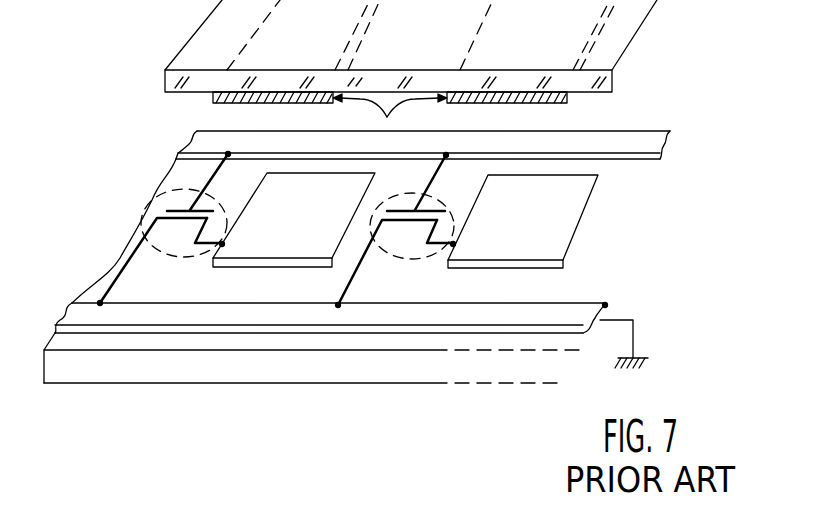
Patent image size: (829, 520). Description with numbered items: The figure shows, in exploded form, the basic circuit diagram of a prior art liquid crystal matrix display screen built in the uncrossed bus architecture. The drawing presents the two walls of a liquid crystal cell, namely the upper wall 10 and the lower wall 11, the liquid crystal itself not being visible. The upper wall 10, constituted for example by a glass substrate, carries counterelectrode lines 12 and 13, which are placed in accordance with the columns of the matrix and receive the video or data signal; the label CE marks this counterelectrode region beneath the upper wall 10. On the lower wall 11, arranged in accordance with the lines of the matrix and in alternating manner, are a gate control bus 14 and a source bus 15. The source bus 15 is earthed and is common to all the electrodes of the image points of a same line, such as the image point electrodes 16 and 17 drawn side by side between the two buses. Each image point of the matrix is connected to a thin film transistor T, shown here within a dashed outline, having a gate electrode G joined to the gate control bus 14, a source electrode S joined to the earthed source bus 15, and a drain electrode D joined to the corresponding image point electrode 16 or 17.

The upper wall 10 is at (180, 77).
The lower wall 11 is at (82, 368).
The counterelectrode line 12 is at (213, 98).
The counterelectrode line 13 is at (562, 98).
The gate control bus 14 is at (617, 145).
The source bus 15 is at (177, 317).
The image point electrode 16 is at (288, 237).
The image point electrode 17 is at (567, 218).
The thin film transistor T is at (272, 230).
The gate electrode G is at (210, 192).
The source electrode S is at (130, 250).
The drain electrode D is at (200, 258).
The common electrode CE is at (390, 113).